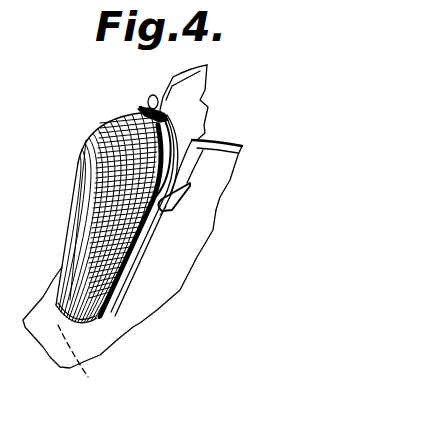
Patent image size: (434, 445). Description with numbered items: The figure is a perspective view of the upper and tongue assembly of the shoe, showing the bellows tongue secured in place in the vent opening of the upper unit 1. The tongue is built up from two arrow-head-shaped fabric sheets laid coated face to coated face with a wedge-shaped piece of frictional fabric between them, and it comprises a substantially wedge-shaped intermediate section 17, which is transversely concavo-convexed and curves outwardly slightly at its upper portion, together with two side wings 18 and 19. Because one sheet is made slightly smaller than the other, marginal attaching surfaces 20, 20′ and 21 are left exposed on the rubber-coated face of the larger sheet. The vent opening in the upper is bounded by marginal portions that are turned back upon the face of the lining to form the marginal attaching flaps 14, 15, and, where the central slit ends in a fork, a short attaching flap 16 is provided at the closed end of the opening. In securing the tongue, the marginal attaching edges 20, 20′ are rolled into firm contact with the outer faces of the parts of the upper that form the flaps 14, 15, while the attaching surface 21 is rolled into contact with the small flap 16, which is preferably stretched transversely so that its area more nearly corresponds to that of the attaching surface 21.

The garment body 1 is at (160, 267).
The marginal attaching flap 14 is at (155, 84).
The marginal attaching flap 15 is at (202, 155).
The short attaching flap 16 is at (65, 325).
The intermediate section 17 is at (100, 236).
The side wing 18 is at (138, 108).
The side wing 19 is at (170, 207).
The marginal attaching surface 20 is at (143, 107).
The marginal attaching surface 20′ is at (190, 180).
The attaching surface 21 is at (89, 365).